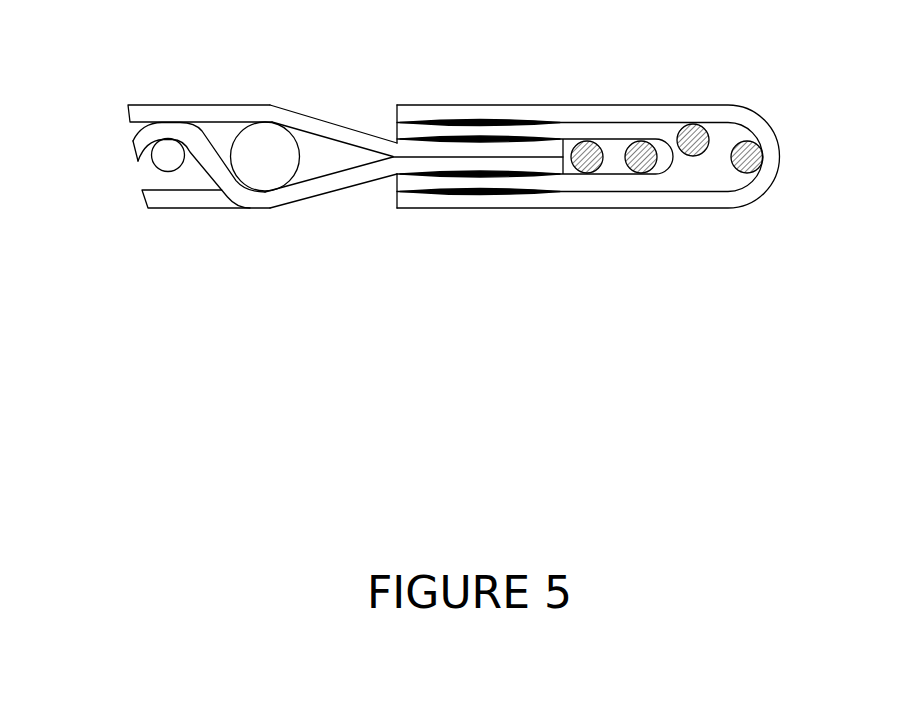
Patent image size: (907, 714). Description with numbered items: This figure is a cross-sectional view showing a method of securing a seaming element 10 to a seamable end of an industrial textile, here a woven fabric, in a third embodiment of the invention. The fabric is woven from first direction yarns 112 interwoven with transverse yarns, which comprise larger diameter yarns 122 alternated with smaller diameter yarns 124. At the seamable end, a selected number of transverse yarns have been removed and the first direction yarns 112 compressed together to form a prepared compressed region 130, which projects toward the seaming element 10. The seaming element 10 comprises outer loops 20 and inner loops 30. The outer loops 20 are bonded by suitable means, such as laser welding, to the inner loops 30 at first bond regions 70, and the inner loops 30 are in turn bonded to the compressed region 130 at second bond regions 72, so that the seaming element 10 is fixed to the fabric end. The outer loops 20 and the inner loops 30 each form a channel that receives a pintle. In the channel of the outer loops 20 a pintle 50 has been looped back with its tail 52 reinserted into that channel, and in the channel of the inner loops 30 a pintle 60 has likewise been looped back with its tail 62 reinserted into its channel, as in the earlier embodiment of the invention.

The seaming element 10 is at (589, 103).
The outer loops 20 is at (757, 125).
The inner loops 30 is at (678, 168).
The pintle 50 is at (762, 157).
The tail 52 is at (700, 126).
The pintle 60 is at (641, 173).
The tail 62 is at (587, 172).
The first bond regions 70 is at (485, 193).
The second bond regions 72 is at (395, 176).
The first direction yarns 112 is at (170, 113).
The larger diameter yarns 122 is at (263, 160).
The smaller diameter yarns 124 is at (168, 160).
The compressed region 130 is at (465, 157).